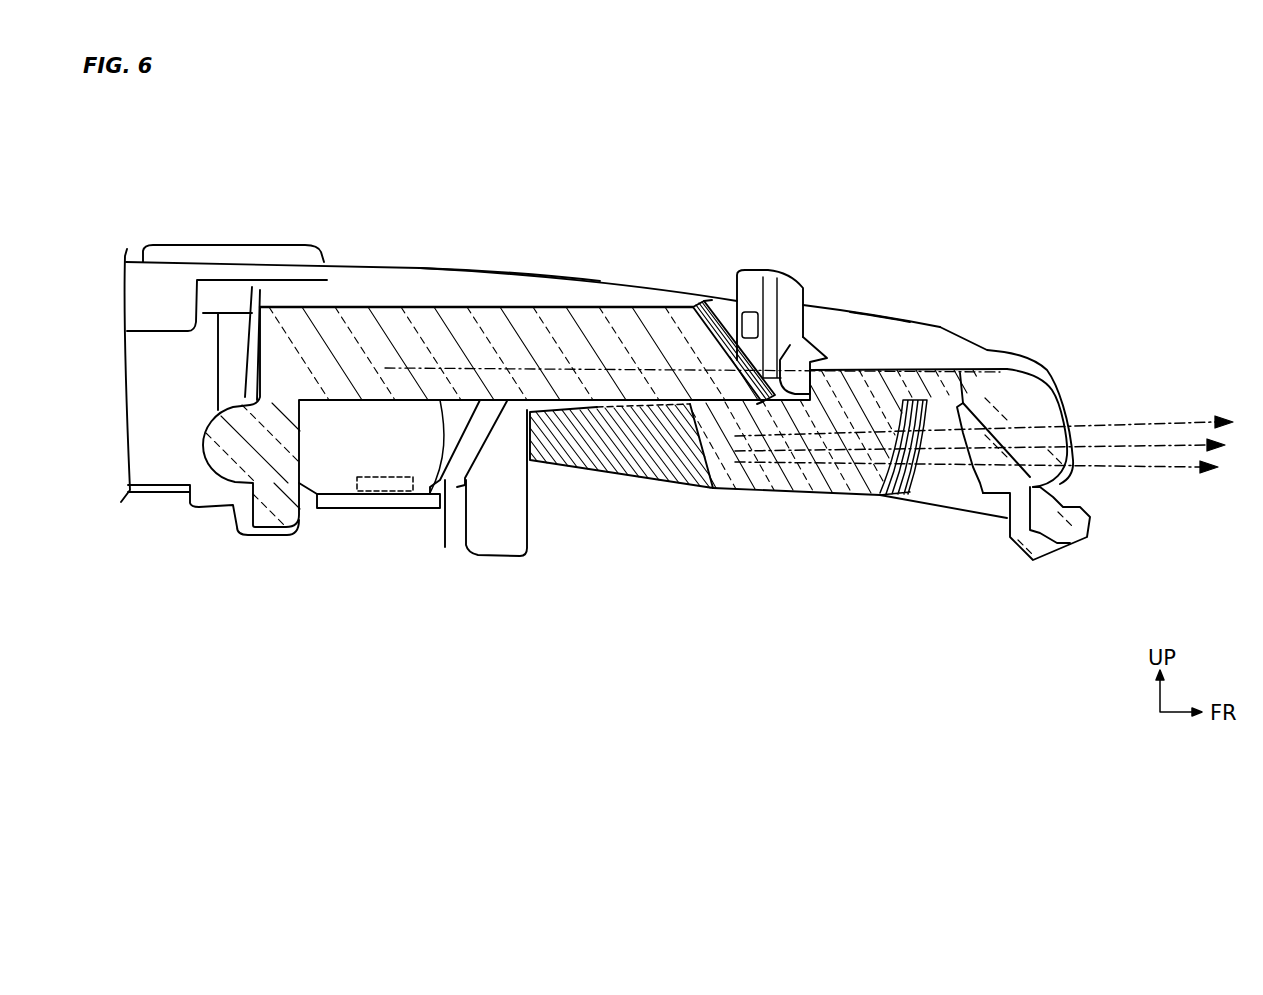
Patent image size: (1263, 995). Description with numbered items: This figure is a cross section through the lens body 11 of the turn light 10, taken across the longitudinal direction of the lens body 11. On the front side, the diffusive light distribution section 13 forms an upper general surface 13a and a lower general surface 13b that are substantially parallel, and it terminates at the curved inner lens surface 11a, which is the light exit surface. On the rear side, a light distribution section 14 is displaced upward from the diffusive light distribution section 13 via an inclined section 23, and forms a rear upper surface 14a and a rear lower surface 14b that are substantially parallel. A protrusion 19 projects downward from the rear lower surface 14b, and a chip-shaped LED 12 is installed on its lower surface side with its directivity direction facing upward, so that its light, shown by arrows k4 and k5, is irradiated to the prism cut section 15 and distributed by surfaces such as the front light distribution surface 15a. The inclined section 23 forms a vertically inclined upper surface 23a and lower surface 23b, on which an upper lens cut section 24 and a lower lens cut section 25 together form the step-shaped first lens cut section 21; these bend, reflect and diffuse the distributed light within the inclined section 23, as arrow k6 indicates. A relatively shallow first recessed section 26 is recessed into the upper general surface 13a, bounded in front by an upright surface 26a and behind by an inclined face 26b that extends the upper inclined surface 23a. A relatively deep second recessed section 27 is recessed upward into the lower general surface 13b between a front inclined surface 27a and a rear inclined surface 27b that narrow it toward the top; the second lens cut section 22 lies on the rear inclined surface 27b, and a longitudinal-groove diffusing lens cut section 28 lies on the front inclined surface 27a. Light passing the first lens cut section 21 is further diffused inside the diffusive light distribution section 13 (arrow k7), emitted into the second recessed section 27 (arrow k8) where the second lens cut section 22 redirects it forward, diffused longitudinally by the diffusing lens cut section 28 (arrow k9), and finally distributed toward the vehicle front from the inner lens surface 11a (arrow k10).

The turn light 10 is at (1019, 366).
The lens body 11 is at (975, 330).
The inner lens surface 11a is at (1055, 392).
The LED 12 is at (405, 492).
The diffusive light distribution section 13 is at (938, 323).
The upper general surface 13a is at (872, 322).
The lower general surface 13b is at (827, 500).
The light distribution section 14 is at (517, 272).
The rear upper surface 14a is at (455, 285).
The rear lower surface 14b is at (447, 547).
The prism cut section 15 is at (482, 352).
The front light distribution surface 15a is at (412, 335).
The protrusion 19 is at (328, 488).
The first lens cut section 21 is at (652, 351).
The second lens cut section 22 is at (935, 409).
The inclined section 23 is at (702, 304).
The upper inclined surface 23a is at (750, 312).
The lower inclined surface 23b is at (712, 455).
The upper lens cut section 24 is at (723, 316).
The lower lens cut section 25 is at (701, 437).
The first recessed section 26 is at (797, 325).
The upright surface 26a is at (815, 345).
The inclined face 26b is at (776, 318).
The second recessed section 27 is at (952, 483).
The front inclined surface 27a is at (1031, 565).
The rear inclined surface 27b is at (917, 500).
The diffusing lens cut section 28 is at (973, 495).
The arrow k4 is at (475, 307).
The arrow k5 is at (578, 368).
The arrow k6 is at (733, 420).
The arrow k7 is at (793, 440).
The arrow k8 is at (975, 425).
The arrow k9 is at (1043, 460).
The arrow k10 is at (1123, 423).